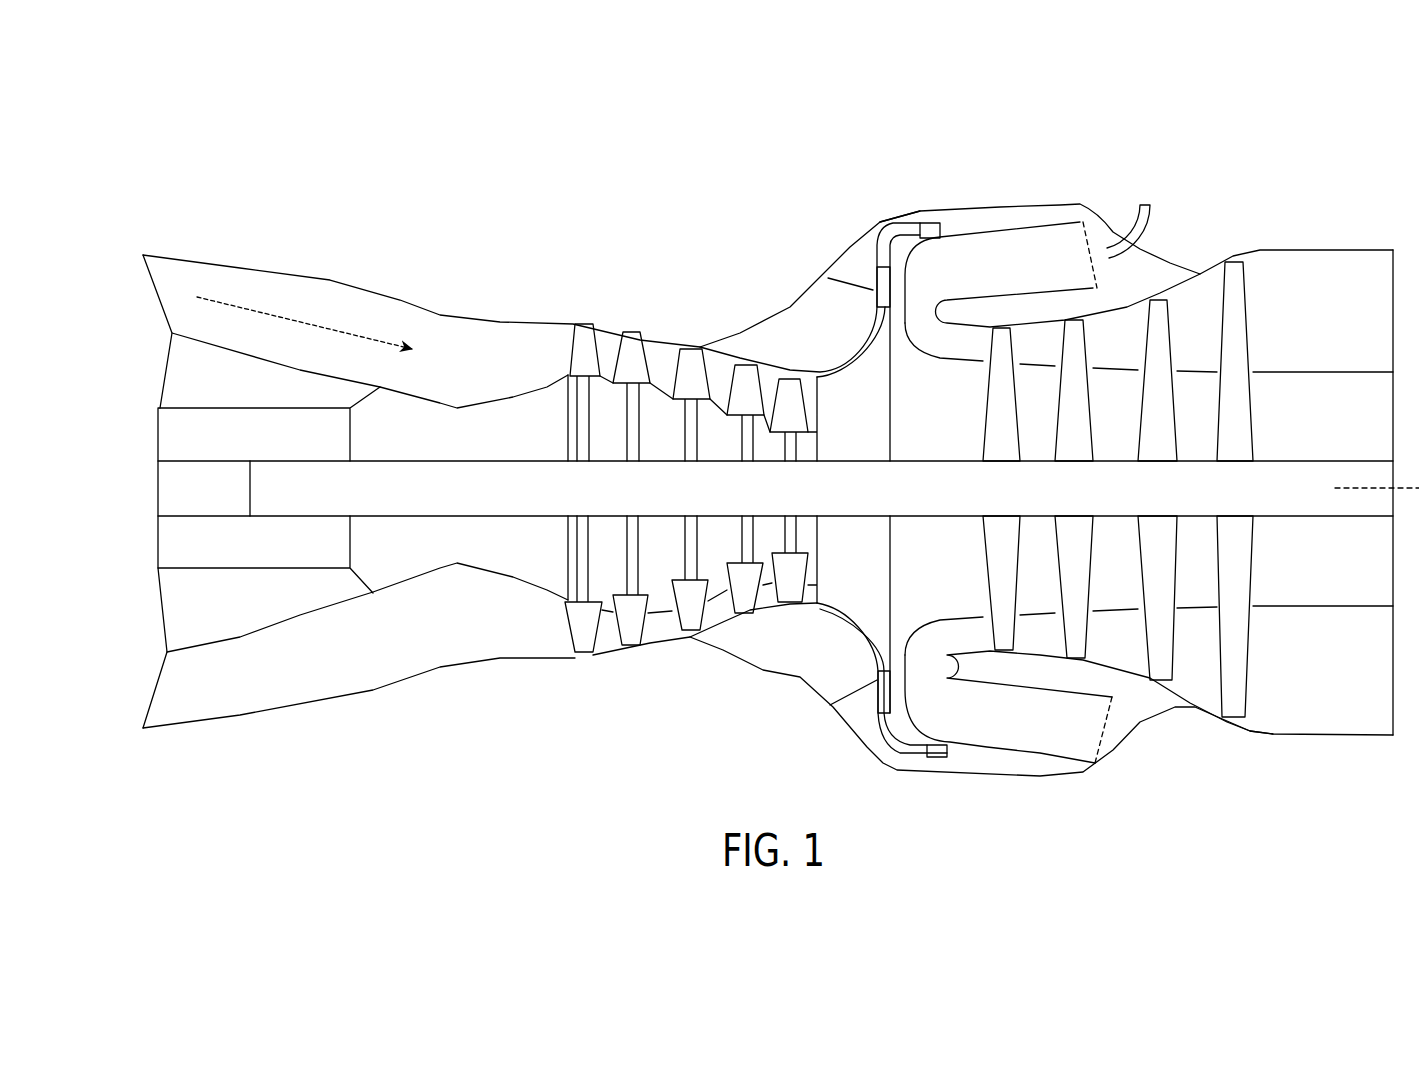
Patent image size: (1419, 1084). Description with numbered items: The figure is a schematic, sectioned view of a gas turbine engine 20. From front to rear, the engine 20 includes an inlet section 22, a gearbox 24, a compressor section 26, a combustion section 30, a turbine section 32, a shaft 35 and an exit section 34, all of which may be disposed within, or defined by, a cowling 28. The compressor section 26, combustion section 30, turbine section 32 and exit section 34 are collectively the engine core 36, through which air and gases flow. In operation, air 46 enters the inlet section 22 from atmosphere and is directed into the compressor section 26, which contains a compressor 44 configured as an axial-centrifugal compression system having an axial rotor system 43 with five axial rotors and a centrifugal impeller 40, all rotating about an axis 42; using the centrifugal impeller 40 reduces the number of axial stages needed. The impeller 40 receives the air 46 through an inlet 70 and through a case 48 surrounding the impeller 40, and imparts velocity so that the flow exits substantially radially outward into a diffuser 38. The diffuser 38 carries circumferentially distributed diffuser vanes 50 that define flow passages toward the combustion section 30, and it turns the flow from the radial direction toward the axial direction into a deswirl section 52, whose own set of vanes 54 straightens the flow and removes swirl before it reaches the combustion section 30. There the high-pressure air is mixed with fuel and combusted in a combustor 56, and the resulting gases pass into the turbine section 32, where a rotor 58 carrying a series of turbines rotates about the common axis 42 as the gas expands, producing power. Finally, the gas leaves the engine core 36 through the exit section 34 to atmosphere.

The engine 20 is at (975, 160).
The inlet section 22 is at (156, 378).
The gearbox 24 is at (158, 547).
The compressor section 26 is at (611, 647).
The cowling 28 is at (283, 713).
The combustion section 30 is at (1033, 767).
The turbine section 32 is at (1201, 692).
The exit section 34 is at (1352, 260).
The shaft 35 is at (488, 507).
The engine core 36 is at (743, 350).
The diffuser 38 is at (876, 736).
The centrifugal impeller 40 is at (893, 352).
The axis 42 is at (1378, 487).
The axial rotor system 43 is at (568, 625).
The compressor 44 is at (690, 640).
The air 46 is at (300, 323).
The case 48 is at (612, 323).
The diffuser vanes 50 is at (878, 292).
The deswirl section 52 is at (916, 211).
The vanes 54 is at (928, 222).
The combustor 56 is at (1045, 285).
The rotor 58 is at (1254, 297).
The inlet 70 is at (161, 312).